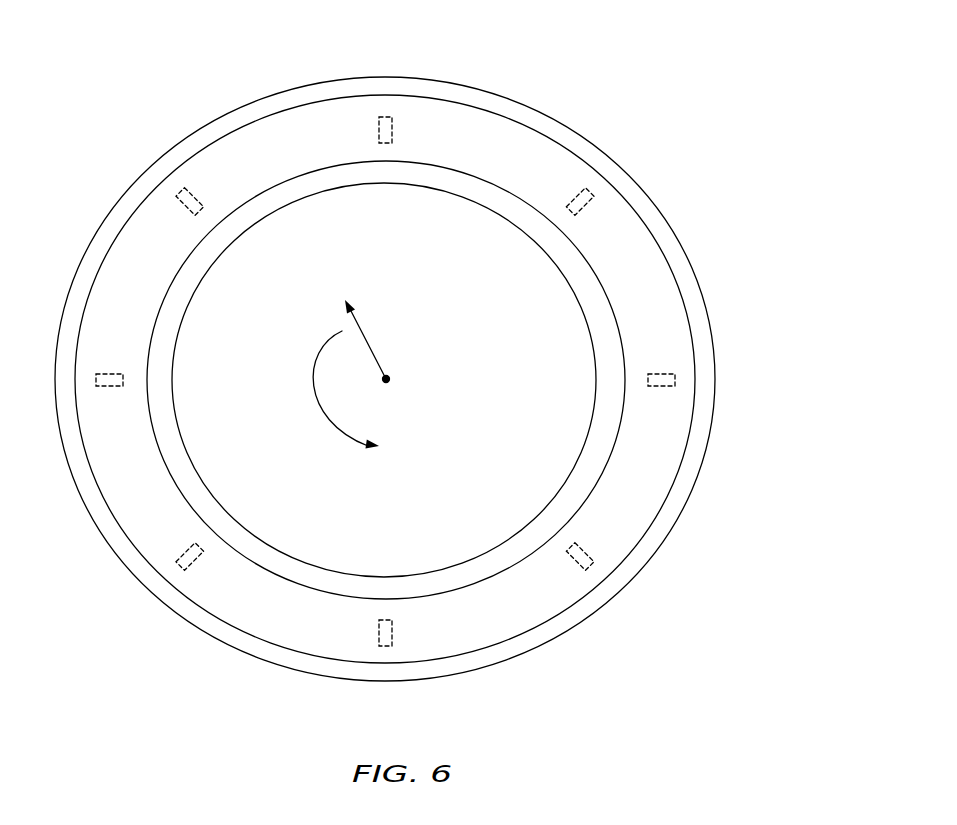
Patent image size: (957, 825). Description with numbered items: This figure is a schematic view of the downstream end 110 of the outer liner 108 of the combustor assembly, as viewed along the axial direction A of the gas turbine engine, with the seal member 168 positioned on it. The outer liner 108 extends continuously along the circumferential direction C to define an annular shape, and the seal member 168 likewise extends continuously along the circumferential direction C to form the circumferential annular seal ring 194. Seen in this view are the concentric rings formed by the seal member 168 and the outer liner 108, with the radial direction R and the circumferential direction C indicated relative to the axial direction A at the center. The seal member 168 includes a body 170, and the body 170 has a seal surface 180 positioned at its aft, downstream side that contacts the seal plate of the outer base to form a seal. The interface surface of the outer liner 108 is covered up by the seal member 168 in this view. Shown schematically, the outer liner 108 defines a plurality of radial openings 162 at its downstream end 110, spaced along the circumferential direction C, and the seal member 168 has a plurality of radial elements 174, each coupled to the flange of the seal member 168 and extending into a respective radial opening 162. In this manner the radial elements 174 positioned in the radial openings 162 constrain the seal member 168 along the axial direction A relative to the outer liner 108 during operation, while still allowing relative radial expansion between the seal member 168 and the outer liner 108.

The outer liner 108 is at (234, 227).
The downstream end 110 is at (205, 279).
The radial opening 162 is at (403, 139).
The seal member 168 is at (289, 136).
The body 170 is at (225, 172).
The radial element 174 is at (386, 117).
The seal surface 180 is at (82, 257).
The annular seal ring 194 is at (670, 141).
The axial direction A is at (390, 378).
The radial direction R is at (364, 340).
The circumferential direction C is at (332, 424).